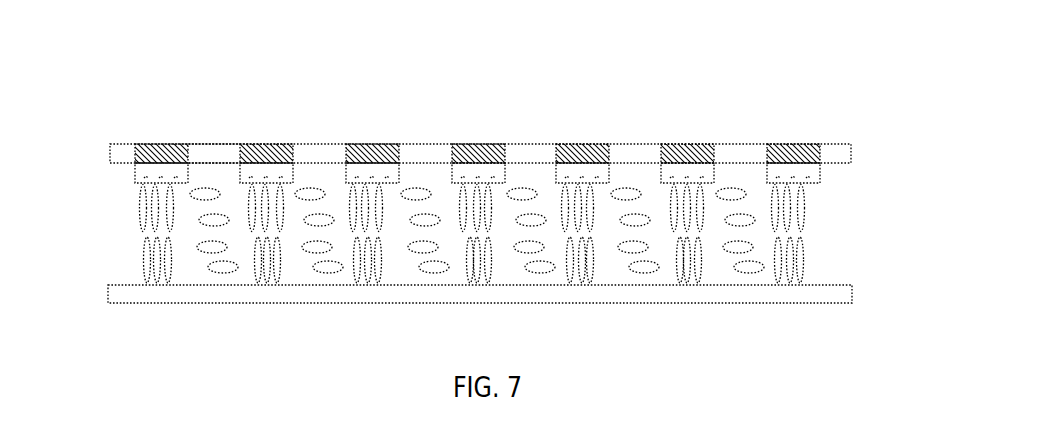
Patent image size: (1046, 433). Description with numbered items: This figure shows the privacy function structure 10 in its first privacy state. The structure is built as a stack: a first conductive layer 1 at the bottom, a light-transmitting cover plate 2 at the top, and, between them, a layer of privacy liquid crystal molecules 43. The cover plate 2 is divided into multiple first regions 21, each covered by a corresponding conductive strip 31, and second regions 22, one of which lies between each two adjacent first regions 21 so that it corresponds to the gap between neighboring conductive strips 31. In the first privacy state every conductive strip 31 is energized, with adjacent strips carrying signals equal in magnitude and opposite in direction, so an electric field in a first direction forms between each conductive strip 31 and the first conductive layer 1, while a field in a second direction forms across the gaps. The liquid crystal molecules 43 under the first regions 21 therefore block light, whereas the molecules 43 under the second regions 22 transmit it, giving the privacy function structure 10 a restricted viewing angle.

The privacy function structure 10 is at (485, 90).
The first conductive layer 1 is at (120, 298).
The light-transmitting cover plate 2 is at (110, 149).
The first regions 21 is at (150, 143).
The second regions 22 is at (217, 148).
The conductive strips 31 is at (820, 168).
The privacy liquid crystal molecules 43 is at (802, 256).